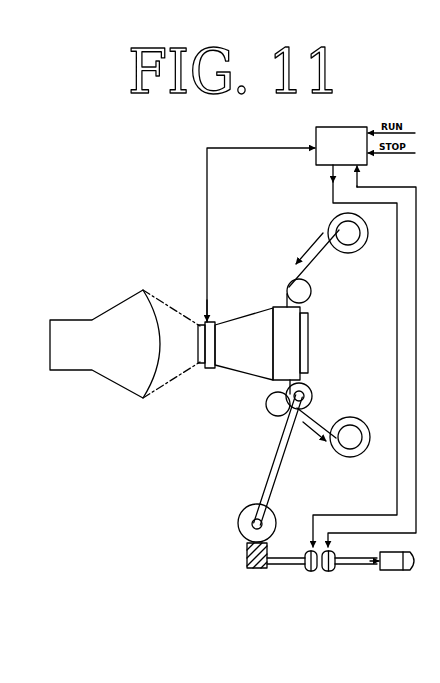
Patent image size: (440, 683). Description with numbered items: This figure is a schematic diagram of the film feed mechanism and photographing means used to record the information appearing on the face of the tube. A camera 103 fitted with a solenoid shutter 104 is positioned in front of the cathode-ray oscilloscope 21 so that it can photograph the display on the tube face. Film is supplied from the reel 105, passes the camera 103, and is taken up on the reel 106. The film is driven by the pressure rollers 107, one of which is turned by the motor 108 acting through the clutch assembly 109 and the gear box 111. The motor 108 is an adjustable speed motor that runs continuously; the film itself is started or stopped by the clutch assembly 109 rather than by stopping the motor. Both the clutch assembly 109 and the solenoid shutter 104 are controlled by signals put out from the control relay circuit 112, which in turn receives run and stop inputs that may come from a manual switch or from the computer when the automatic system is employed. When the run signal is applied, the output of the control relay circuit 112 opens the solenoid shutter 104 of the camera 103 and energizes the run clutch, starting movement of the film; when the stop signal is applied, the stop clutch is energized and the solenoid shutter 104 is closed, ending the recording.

The cathode-ray oscilloscope 21 is at (82, 320).
The camera 103 is at (258, 313).
The solenoid shutter 104 is at (203, 320).
The reel 105 is at (344, 254).
The reel 106 is at (365, 408).
The pressure rollers 107 is at (310, 392).
The motor 108 is at (409, 570).
The clutch assembly 109 is at (309, 571).
The gear box 111 is at (238, 529).
The control relay circuit 112 is at (348, 127).